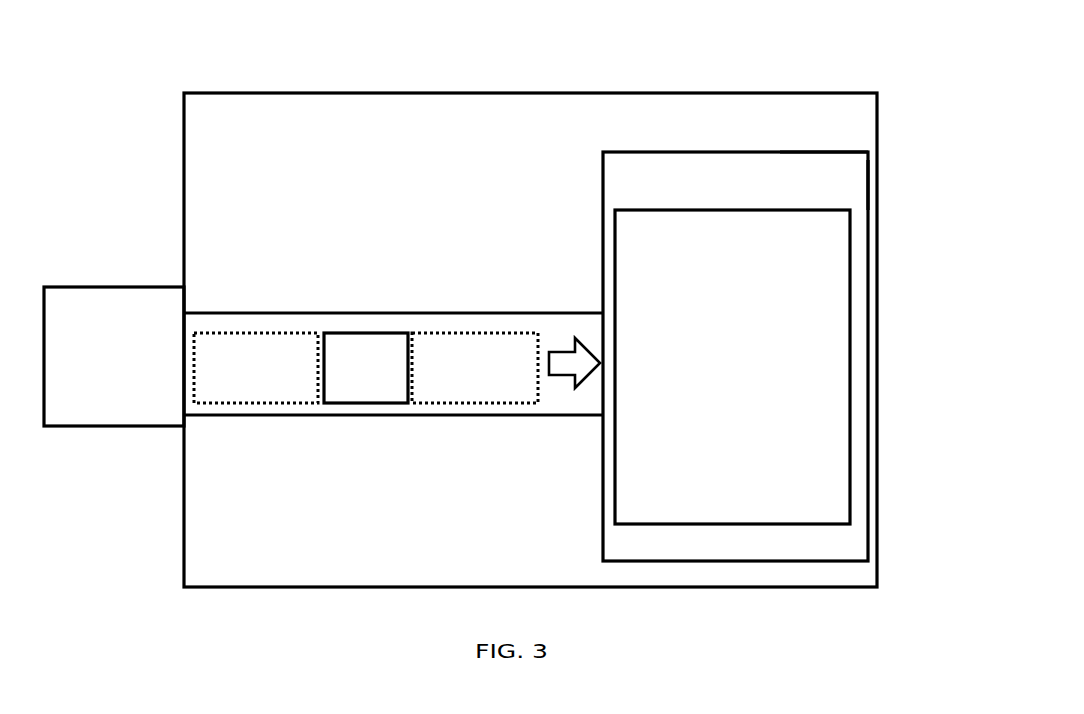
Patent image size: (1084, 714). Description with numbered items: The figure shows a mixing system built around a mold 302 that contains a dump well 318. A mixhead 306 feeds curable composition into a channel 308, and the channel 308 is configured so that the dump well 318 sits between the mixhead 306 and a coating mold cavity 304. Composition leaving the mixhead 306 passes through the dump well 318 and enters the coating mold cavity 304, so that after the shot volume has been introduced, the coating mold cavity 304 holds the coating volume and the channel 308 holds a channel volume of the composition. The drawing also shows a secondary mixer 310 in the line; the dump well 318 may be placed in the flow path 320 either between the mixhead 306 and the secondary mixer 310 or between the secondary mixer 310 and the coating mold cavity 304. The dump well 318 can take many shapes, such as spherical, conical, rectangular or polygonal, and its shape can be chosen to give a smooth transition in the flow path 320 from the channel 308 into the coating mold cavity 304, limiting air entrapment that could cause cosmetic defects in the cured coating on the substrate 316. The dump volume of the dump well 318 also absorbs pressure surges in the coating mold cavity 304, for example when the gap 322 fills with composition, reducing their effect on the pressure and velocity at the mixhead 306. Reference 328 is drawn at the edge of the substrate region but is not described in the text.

The mold 302 is at (530, 303).
The coating mold cavity 304 is at (774, 367).
The mixhead 306 is at (114, 319).
The channel 308 is at (393, 225).
The secondary mixer 310 is at (366, 205).
The substrate 316 is at (735, 298).
The dump well 318 is at (388, 227).
The flow path 320 is at (592, 218).
The gap 322 is at (888, 163).
The substrate edge 328 is at (870, 115).